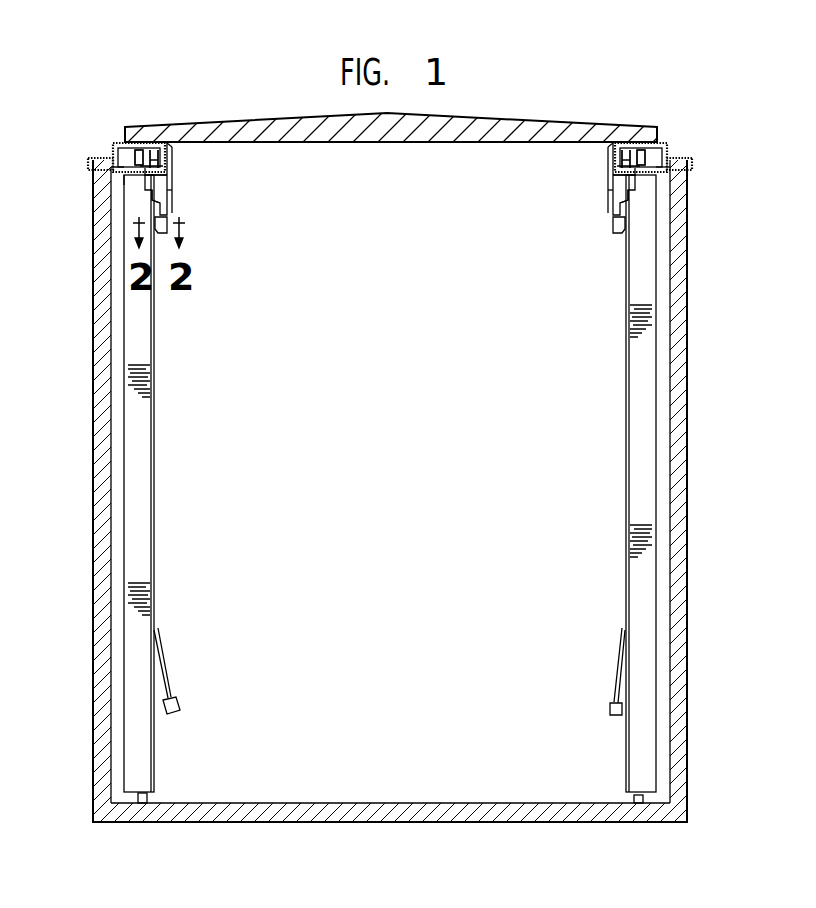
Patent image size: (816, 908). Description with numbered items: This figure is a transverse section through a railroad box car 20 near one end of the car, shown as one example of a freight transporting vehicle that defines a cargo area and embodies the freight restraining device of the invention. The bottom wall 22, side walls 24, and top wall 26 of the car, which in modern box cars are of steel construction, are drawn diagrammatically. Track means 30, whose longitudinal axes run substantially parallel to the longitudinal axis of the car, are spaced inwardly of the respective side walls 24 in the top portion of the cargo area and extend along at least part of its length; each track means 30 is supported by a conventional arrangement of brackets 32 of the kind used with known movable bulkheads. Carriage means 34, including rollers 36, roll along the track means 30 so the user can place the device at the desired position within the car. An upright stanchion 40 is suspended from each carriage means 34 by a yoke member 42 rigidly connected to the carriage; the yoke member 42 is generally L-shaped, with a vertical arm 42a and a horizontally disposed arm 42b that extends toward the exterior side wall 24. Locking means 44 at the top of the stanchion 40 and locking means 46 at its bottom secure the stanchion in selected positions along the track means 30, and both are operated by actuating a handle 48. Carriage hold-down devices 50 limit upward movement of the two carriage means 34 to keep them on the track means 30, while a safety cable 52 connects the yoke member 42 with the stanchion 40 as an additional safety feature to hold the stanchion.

The railroad box car 20 is at (693, 300).
The bottom wall 22 is at (323, 825).
The side walls 24 is at (98, 600).
The top wall 26 is at (433, 141).
The track means 30 is at (168, 193).
The brackets 32 is at (105, 153).
The carriage means 34 is at (155, 142).
The rollers 36 is at (130, 127).
The upright stanchion 40 is at (152, 480).
The yoke member 42 is at (174, 203).
The vertical arm 42a is at (172, 175).
The horizontally disposed arm 42b is at (153, 203).
The locking means 44 is at (130, 178).
The locking means 46 is at (147, 797).
The handle 48 is at (170, 688).
The carriage hold-down devices 50 is at (168, 167).
The safety cable 52 is at (172, 212).